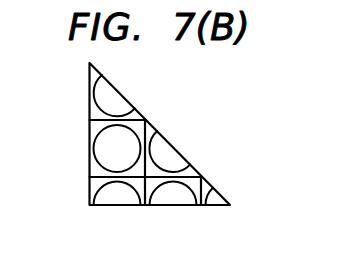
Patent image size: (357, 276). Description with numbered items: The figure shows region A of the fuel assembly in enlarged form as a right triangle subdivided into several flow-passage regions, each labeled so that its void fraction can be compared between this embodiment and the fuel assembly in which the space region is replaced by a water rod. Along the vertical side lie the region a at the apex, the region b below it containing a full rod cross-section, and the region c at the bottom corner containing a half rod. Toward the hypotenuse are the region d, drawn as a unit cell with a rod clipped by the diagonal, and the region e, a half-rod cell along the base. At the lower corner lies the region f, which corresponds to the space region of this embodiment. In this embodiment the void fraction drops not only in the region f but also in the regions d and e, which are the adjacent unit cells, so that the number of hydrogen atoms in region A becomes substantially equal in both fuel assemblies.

The region a is at (90, 87).
The region b is at (90, 139).
The region c is at (90, 193).
The region d is at (193, 168).
The region e is at (200, 205).
The region f is at (207, 185).